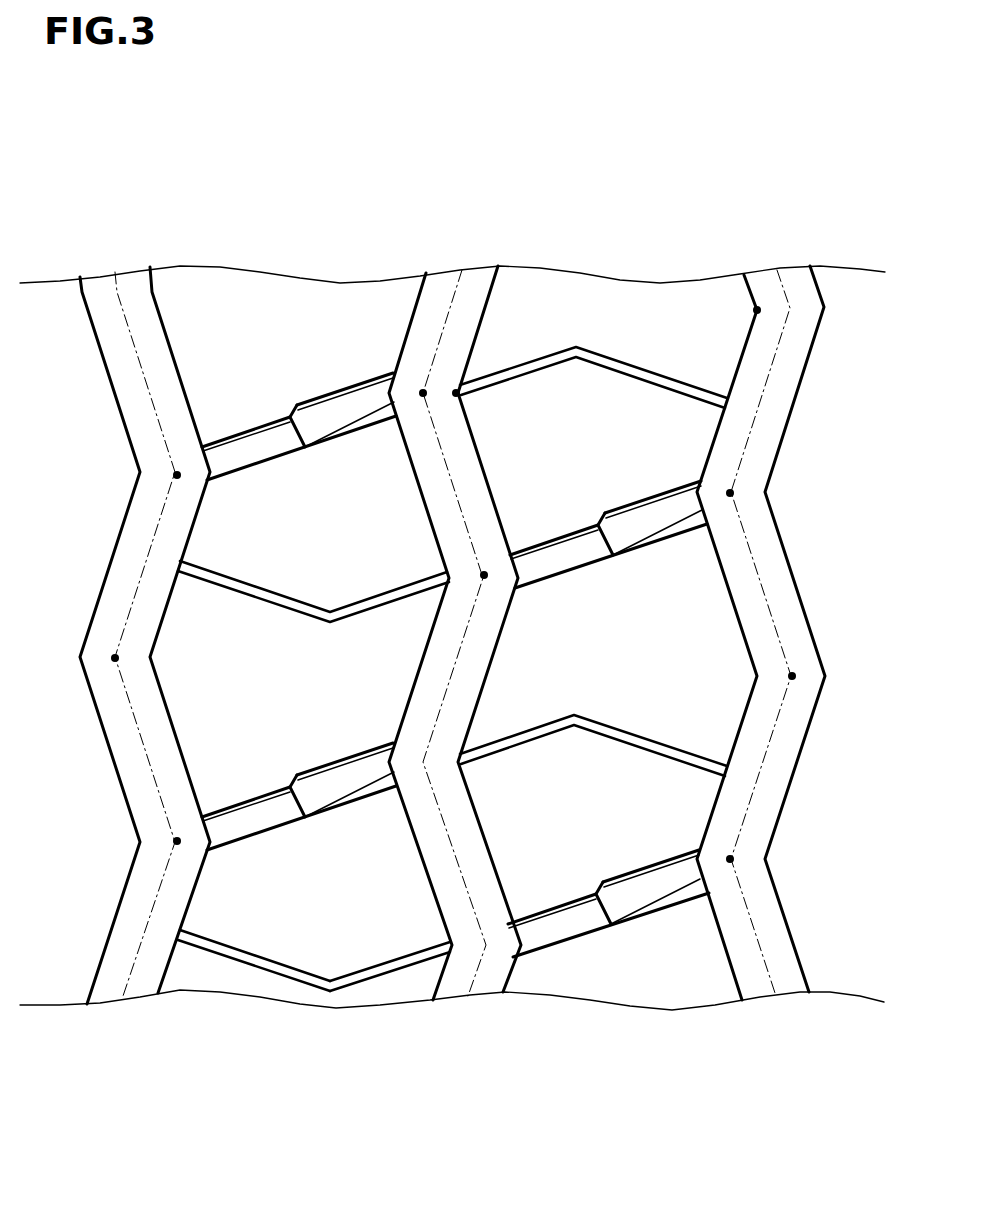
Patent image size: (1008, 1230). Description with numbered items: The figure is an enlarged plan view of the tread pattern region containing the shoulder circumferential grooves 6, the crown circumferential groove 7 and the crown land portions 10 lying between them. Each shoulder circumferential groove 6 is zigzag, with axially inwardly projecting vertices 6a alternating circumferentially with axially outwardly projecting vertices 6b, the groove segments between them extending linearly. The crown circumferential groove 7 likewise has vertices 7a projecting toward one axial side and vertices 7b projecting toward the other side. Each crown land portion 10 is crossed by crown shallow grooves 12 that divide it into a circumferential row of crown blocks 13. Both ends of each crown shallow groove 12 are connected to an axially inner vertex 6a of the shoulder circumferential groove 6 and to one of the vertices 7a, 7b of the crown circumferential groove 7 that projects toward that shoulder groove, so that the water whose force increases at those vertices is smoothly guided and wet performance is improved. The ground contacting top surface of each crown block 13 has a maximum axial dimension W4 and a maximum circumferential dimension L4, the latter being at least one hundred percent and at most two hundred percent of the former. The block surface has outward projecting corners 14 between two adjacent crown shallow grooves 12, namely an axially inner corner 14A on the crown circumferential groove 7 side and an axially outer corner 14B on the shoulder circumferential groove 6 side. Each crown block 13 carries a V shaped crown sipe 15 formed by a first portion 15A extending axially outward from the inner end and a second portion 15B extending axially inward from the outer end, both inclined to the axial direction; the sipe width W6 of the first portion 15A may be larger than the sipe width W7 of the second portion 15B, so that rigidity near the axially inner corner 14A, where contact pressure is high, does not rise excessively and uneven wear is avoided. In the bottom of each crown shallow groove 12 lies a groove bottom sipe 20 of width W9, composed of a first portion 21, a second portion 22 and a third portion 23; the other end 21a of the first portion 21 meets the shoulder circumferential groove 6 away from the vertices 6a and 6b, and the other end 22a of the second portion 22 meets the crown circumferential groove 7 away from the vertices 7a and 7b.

The shoulder circumferential groove 6 is at (123, 318).
The axially inwardly projecting vertex 6a is at (177, 475).
The axially outwardly projecting vertex 6b is at (115, 658).
The crown circumferential groove 7 is at (439, 312).
The vertex projecting toward one axial side 7a is at (484, 575).
The vertex projecting toward other axial side 7b is at (423, 393).
The crown land portion 10 is at (633, 980).
The crown shallow groove 12 is at (252, 453).
The crown block 13 is at (230, 631).
The corner 14 is at (606, 260).
The axially inner corner 14A is at (456, 393).
The axially outer corner 14B is at (694, 243).
The crown sipe 15 is at (314, 1039).
The first portion of crown sipe 15A is at (366, 970).
The second portion of crown sipe 15B is at (282, 973).
The groove bottom sipe 20 is at (458, 547).
The first portion of groove bottom sipe 21 is at (243, 425).
The other end of first portion 21a is at (203, 440).
The second portion of groove bottom sipe 22 is at (350, 408).
The other end of second portion 22a is at (369, 300).
The third portion of groove bottom sipe 23 is at (303, 410).
The maximum dimension in tire circumferential direction L4 is at (797, 718).
The maximum dimension in tire axial direction W4 is at (607, 755).
The sipe width of first portion W6 is at (401, 973).
The sipe width of second portion W7 is at (227, 942).
The width of groove bottom sipe W9 is at (262, 790).